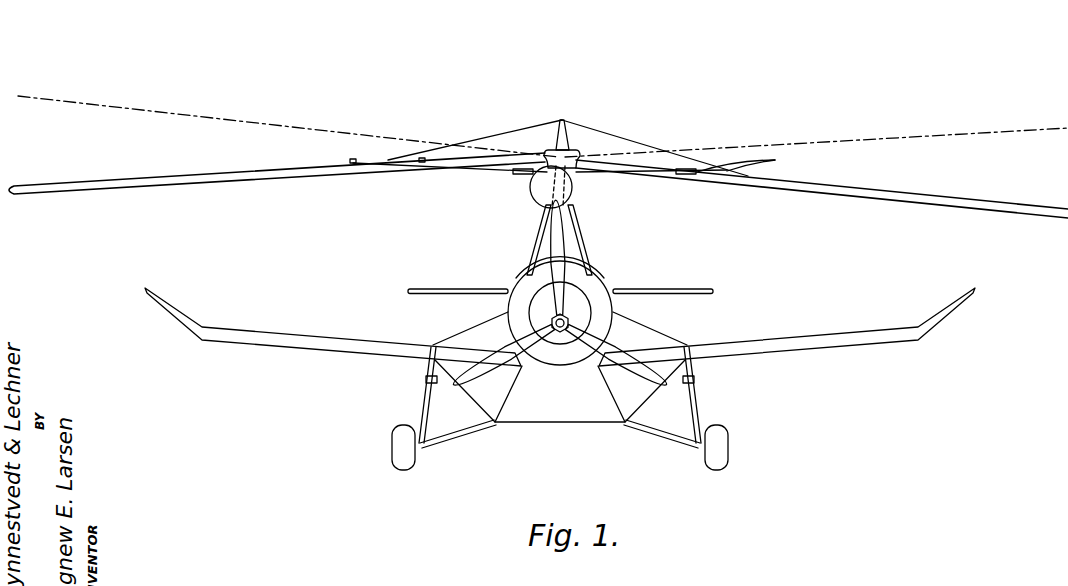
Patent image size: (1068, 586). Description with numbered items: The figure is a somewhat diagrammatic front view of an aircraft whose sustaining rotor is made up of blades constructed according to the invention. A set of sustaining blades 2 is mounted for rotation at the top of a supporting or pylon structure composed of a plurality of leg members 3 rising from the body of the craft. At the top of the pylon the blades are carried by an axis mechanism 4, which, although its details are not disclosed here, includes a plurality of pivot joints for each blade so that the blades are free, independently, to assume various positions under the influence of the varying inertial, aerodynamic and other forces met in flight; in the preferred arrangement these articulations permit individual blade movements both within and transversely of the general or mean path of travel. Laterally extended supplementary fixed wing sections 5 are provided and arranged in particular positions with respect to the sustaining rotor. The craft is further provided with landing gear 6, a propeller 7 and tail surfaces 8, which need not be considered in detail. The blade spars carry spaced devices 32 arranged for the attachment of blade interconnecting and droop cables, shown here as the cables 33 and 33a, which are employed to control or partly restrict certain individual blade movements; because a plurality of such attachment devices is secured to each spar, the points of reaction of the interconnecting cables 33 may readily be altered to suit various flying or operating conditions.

The sustaining blades 2 is at (196, 184).
The leg members 3 is at (532, 245).
The axis mechanism 4 is at (563, 144).
The fixed wing sections 5 is at (300, 334).
The landing gear 6 is at (560, 363).
The propeller 7 is at (616, 348).
The tail surfaces 8 is at (415, 288).
The spaced devices 32 is at (768, 175).
The interconnecting cables 33 is at (600, 174).
The droop cables 33a is at (613, 122).